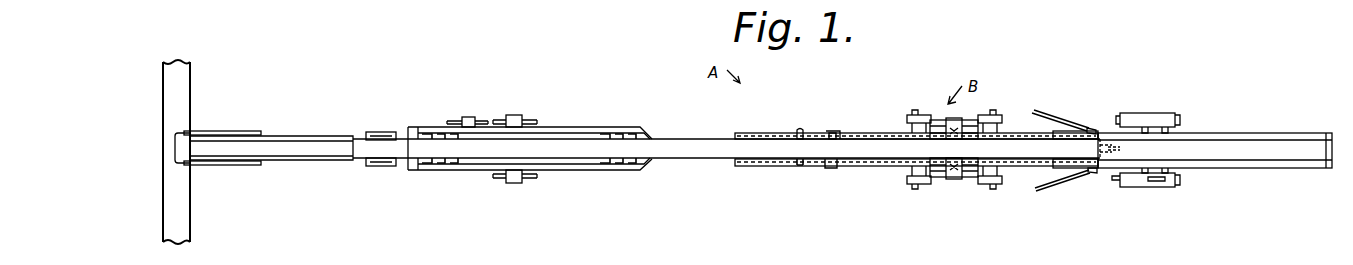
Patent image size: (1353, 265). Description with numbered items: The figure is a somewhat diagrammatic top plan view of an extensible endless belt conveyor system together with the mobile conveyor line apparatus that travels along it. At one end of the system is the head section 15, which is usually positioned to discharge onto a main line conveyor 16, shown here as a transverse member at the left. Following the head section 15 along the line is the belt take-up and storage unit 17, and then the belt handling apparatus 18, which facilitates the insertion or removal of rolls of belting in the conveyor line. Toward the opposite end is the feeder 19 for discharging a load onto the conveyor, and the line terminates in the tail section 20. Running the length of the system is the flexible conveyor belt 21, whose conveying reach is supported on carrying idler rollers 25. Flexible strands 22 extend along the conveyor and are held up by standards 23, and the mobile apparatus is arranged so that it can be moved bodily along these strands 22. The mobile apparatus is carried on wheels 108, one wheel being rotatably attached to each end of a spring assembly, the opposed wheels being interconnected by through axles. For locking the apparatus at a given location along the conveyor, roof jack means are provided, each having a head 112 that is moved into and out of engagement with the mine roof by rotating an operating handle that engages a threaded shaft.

The head section 15 is at (222, 165).
The main line conveyor 16 is at (182, 110).
The belt take-up and storage unit 17 is at (541, 129).
The belt handling apparatus 18 is at (362, 131).
The feeder 19 is at (1157, 115).
The tail section 20 is at (1072, 160).
The flexible conveyor belt 21 is at (698, 122).
The flexible strands 22 is at (773, 124).
The standards 23 is at (829, 168).
The carrying idler rollers 25 is at (806, 167).
The wheels 108 is at (921, 115).
The head 112 is at (953, 120).